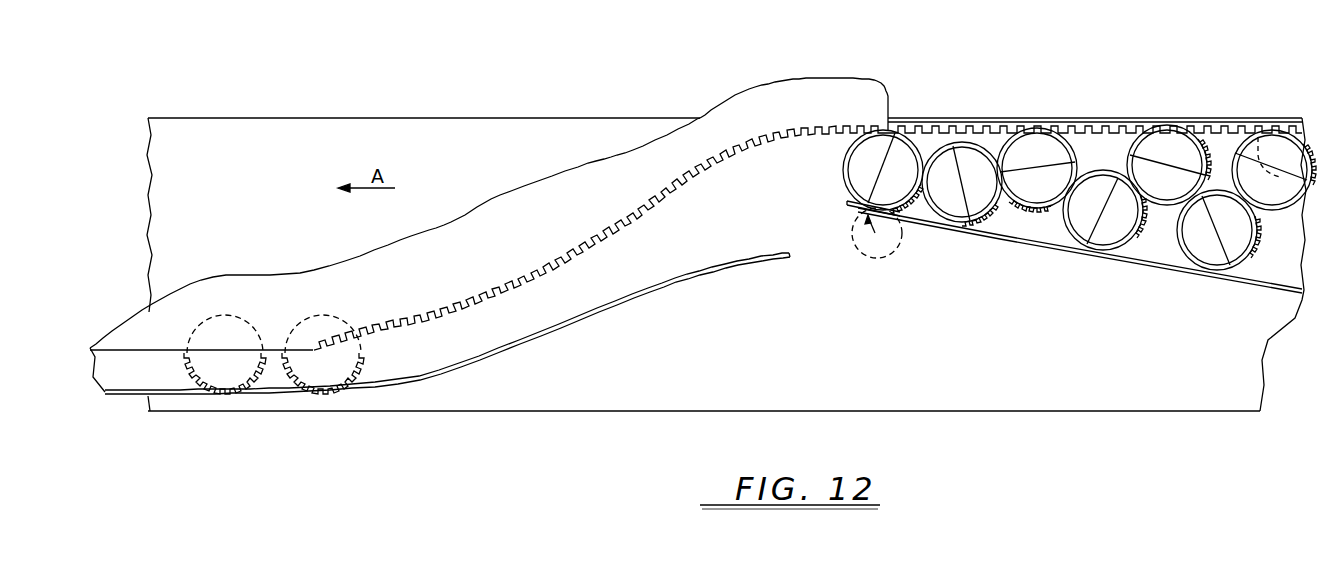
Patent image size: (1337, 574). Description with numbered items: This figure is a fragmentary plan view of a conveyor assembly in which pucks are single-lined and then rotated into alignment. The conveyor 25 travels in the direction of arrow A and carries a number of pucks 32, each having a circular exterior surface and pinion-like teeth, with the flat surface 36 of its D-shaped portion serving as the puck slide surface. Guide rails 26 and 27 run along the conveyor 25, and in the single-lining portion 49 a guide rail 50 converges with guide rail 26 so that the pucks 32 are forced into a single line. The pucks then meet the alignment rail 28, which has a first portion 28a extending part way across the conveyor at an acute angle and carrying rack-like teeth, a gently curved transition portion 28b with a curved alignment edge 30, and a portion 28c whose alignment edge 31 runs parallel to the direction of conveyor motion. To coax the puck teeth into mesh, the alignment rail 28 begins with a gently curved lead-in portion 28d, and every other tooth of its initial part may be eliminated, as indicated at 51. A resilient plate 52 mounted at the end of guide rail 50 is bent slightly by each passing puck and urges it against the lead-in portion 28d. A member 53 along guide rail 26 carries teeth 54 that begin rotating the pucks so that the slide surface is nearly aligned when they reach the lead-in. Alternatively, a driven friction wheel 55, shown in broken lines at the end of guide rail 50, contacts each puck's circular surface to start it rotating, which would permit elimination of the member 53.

The conveyor 25 is at (165, 185).
The guide rail 26 is at (973, 117).
The guide rail 27 is at (693, 280).
The alignment rail 28 is at (580, 162).
The first portion of alignment rail 28a is at (723, 120).
The transition portion of alignment rail 28b is at (318, 290).
The parallel portion of alignment rail 28c is at (170, 330).
The lead-in portion of alignment rail 28d is at (775, 95).
The curved alignment edge 30 is at (323, 388).
The parallel alignment edge 31 is at (225, 392).
The puck 32 is at (875, 172).
The flat surface 36 is at (1258, 137).
The single-lining portion of conveyor 49 is at (1005, 252).
The guide rail 50 is at (1107, 253).
The region of eliminated teeth 51 is at (828, 127).
The resilient plate 52 is at (850, 206).
The member 53 is at (1128, 132).
The teeth 54 is at (1097, 145).
The driven friction wheel 55 is at (893, 255).